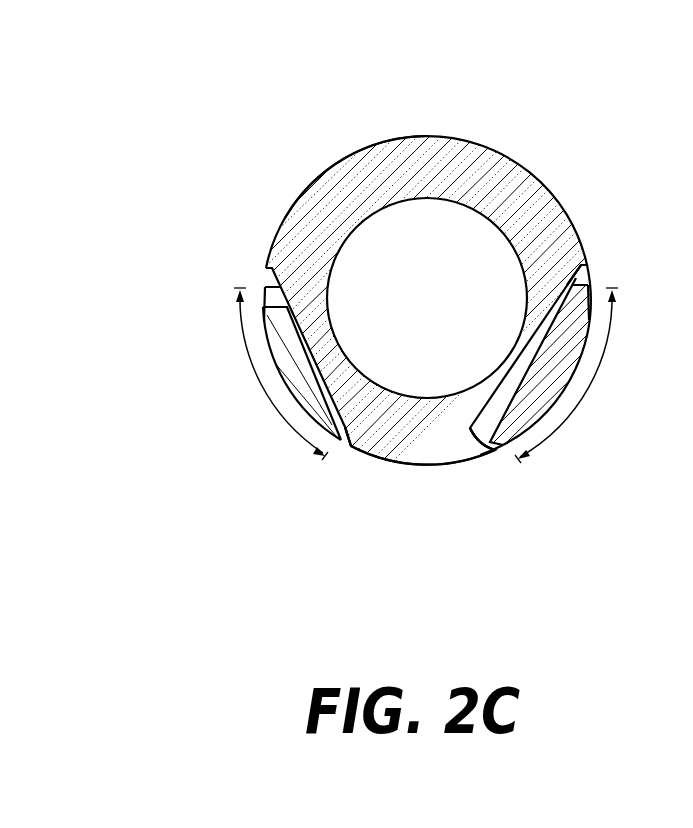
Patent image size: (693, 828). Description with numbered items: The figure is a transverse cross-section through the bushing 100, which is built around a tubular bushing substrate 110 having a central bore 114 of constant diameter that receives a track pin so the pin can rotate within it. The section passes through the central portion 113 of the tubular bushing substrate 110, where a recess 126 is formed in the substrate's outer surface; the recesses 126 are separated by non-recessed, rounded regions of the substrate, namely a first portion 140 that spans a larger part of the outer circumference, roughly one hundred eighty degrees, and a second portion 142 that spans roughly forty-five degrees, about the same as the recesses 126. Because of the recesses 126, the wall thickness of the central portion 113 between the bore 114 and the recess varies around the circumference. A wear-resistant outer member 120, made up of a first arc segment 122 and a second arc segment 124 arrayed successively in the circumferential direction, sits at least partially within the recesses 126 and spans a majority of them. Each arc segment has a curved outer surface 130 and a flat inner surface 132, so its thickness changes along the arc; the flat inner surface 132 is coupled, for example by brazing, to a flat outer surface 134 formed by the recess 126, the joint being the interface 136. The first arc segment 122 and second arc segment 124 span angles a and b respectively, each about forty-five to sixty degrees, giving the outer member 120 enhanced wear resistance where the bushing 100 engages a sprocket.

The bushing 100 is at (94, 147).
The tubular bushing substrate 110 is at (387, 84).
The central portion 113 is at (467, 190).
The bore 114 is at (490, 245).
The outer member 120 is at (468, 490).
The first arc segment 122 is at (357, 432).
The second arc segment 124 is at (481, 432).
The recess 126 is at (348, 456).
The curved outer surface 130 is at (263, 340).
The flat inner surface 132 is at (264, 306).
The flat outer surface 134 is at (270, 272).
The interface 136 is at (274, 277).
The first portion 140 is at (311, 186).
The second portion 142 is at (492, 462).
The angle a is at (262, 404).
The angle b is at (616, 298).